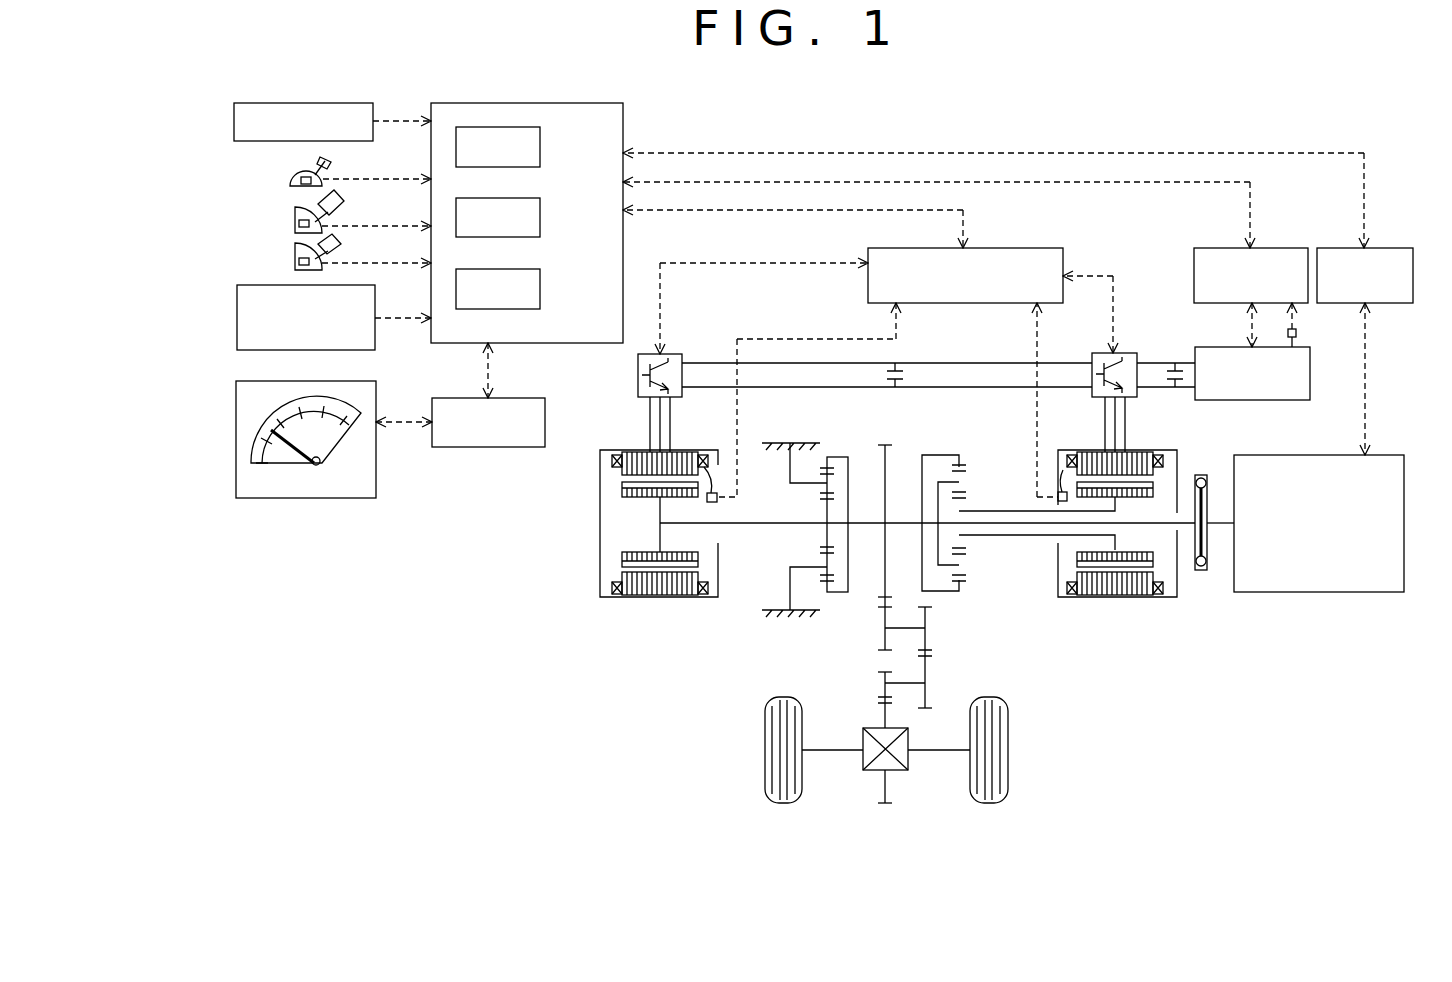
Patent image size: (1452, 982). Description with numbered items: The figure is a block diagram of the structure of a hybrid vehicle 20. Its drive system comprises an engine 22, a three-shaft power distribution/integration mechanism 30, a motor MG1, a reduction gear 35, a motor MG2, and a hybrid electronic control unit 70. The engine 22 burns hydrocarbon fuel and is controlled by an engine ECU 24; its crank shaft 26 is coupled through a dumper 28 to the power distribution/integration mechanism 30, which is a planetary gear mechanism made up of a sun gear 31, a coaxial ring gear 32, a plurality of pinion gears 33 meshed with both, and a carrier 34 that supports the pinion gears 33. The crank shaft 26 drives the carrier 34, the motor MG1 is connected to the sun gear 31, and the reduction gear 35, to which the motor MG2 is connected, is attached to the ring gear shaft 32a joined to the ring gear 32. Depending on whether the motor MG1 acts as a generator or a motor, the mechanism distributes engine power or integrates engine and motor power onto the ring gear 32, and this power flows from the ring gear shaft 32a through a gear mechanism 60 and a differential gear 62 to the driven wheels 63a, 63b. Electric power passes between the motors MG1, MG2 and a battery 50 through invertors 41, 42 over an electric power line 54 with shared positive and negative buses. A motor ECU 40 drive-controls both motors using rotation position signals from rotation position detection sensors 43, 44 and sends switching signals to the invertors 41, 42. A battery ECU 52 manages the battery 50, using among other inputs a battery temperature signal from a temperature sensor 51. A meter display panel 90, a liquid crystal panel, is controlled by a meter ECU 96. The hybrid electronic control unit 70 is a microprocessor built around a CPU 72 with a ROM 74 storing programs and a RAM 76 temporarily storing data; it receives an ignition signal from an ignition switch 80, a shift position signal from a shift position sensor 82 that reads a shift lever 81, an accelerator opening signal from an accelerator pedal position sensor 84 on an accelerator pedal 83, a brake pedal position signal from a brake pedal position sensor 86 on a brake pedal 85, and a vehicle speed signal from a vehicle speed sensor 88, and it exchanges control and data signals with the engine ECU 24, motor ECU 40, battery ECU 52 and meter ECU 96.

The hybrid vehicle 20 is at (1147, 125).
The engine 22 is at (1388, 455).
The engine electronic control unit 24 is at (1386, 248).
The crank shaft 26 is at (1216, 526).
The dumper 28 is at (1200, 571).
The power distribution/integration mechanism 30 is at (1018, 510).
The sun gear 31 is at (960, 538).
The ring gear 32 is at (960, 585).
The ring gear shaft 32a is at (870, 560).
The pinion gears 33 is at (960, 563).
The carrier 34 is at (934, 493).
The reduction gear 35 is at (827, 442).
The motor electronic control unit 40 is at (1005, 248).
The invertor 41 is at (1128, 353).
The invertor 42 is at (672, 354).
The rotation position detection sensor 43 is at (1063, 470).
The rotation position detection sensor 44 is at (712, 493).
The battery 50 is at (1252, 400).
The temperature sensor 51 is at (1296, 333).
The battery electronic control unit 52 is at (1281, 248).
The electric power line 54 is at (950, 387).
The gear mechanism 60 is at (967, 665).
The differential gear 62 is at (908, 760).
The driven wheel 63a is at (783, 698).
The driven wheel 63b is at (1000, 688).
The hybrid electronic control unit 70 is at (523, 103).
The CPU 72 is at (540, 147).
The ROM 74 is at (540, 217).
The RAM 76 is at (540, 289).
The ignition switch 80 is at (234, 121).
The shift lever 81 is at (318, 163).
The shift position sensor 82 is at (290, 180).
The accelerator pedal 83 is at (322, 204).
The accelerator pedal position sensor 84 is at (295, 223).
The brake pedal 85 is at (320, 244).
The brake pedal position sensor 86 is at (295, 260).
The vehicle speed sensor 88 is at (237, 318).
The meter display panel 90 is at (236, 438).
The meter electronic control unit 96 is at (530, 398).
The motor MG1 is at (1118, 597).
The motor MG2 is at (637, 450).